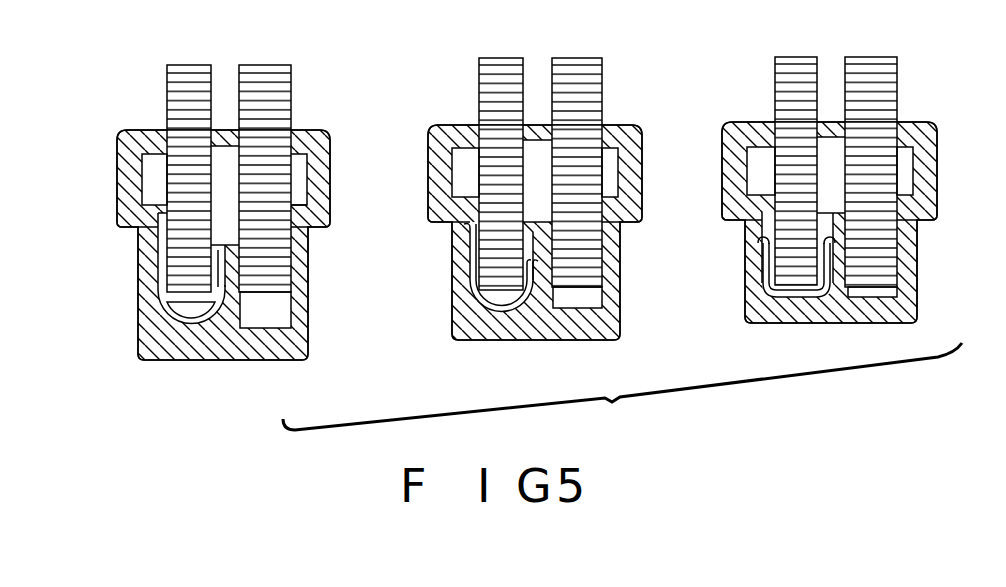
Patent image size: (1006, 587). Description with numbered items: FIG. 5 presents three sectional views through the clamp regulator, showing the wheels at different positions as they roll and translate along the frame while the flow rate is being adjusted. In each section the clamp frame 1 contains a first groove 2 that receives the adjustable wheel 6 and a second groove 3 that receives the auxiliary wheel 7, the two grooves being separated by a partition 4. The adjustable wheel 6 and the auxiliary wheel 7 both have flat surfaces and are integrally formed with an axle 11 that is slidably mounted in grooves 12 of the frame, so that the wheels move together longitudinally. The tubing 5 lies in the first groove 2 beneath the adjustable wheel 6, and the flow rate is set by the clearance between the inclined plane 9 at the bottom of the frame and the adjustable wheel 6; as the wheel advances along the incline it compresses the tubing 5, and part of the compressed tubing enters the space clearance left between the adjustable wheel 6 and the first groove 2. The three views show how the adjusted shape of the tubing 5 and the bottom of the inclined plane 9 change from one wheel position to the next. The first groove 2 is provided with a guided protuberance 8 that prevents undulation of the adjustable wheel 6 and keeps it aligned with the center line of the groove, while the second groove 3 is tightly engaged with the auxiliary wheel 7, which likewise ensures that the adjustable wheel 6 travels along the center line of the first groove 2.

The clamp frame 1 is at (282, 350).
The first groove 2 is at (168, 260).
The second groove 3 is at (278, 310).
The partition 4 is at (237, 253).
The tubing 5 is at (172, 298).
The adjustable wheel 6 is at (186, 73).
The auxiliary wheel 7 is at (273, 73).
The guided protuberance 8 is at (158, 213).
The inclined plane 9 is at (192, 322).
The axle 11 is at (298, 168).
The grooves 12 is at (300, 206).